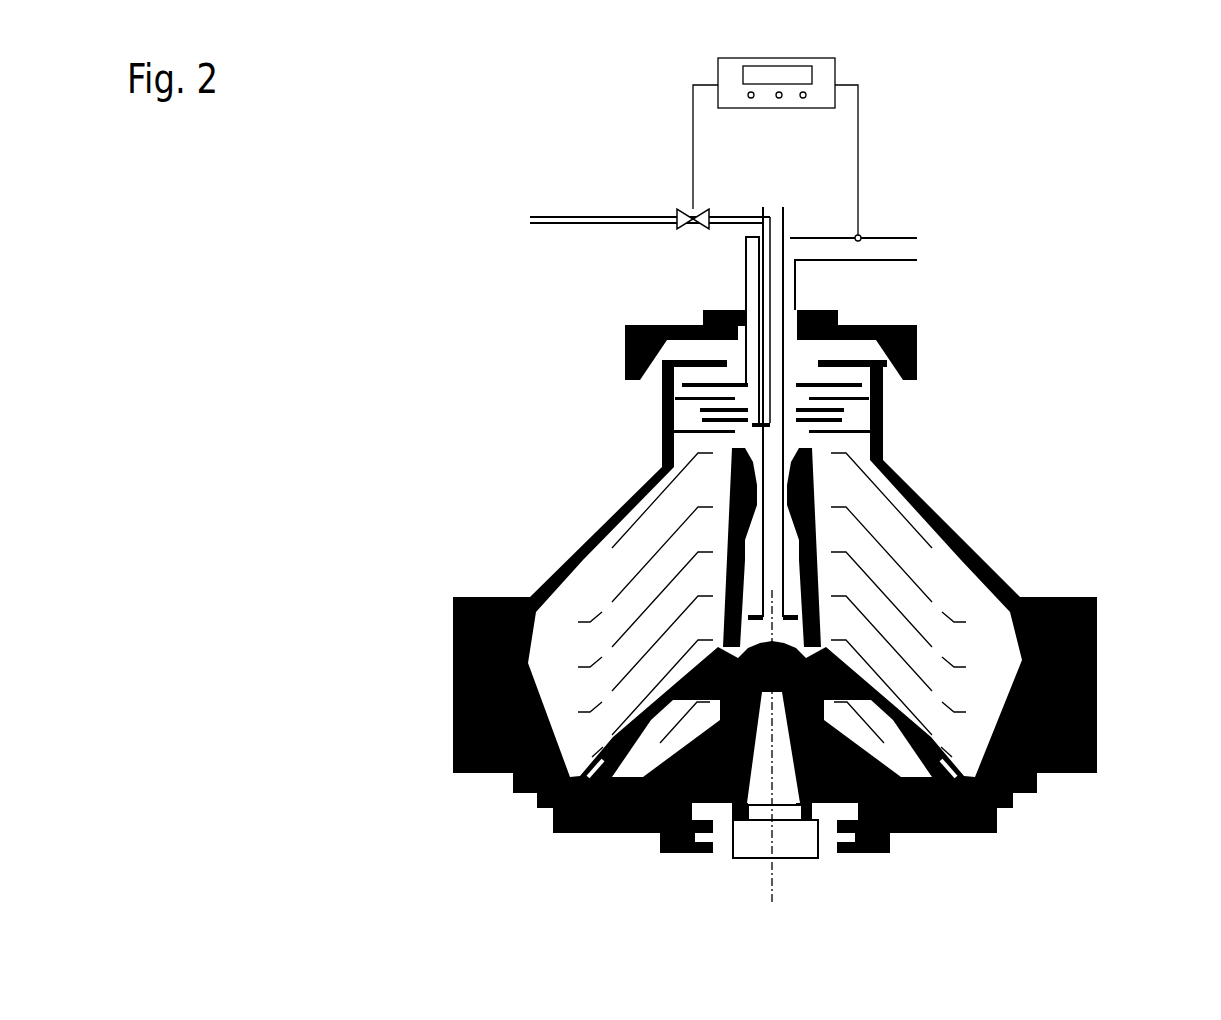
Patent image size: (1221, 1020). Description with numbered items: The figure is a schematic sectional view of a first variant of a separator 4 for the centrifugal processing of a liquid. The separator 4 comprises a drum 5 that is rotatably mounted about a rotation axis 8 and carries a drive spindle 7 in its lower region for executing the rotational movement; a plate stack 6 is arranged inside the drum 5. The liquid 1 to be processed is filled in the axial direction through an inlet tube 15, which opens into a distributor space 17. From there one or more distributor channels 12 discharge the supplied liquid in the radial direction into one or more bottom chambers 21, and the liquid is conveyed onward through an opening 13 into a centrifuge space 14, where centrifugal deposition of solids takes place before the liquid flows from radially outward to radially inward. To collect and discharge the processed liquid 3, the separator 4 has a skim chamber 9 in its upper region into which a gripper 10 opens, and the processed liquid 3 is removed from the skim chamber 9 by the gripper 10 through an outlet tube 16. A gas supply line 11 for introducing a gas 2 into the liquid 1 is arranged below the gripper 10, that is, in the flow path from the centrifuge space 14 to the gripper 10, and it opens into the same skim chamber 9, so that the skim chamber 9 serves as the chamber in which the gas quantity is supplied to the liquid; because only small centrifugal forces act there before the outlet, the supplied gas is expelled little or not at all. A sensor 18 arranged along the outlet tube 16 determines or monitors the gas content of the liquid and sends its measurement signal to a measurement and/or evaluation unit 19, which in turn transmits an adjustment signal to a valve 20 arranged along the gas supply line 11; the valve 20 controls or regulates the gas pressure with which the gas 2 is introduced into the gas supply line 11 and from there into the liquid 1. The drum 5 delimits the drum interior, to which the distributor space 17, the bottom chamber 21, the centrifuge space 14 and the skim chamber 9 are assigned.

The liquid 1 is at (771, 266).
The gas 2 is at (638, 229).
The processed liquid 3 is at (863, 238).
The separator 4 is at (764, 502).
The drum 5 is at (724, 606).
The plate stack 6 is at (903, 485).
The drive spindle 7 is at (758, 778).
The rotation axis 8 is at (775, 905).
The skim chamber 9 is at (690, 412).
The gripper 10 is at (847, 412).
The gas supply line 11 is at (748, 426).
The distributor channel 12 is at (697, 700).
The opening 13 is at (605, 755).
The centrifuge space 14 is at (995, 635).
The inlet tube 15 is at (778, 207).
The outlet tube 16 is at (920, 262).
The distributor space 17 is at (793, 627).
The sensor 18 is at (860, 235).
The measurement and/or evaluation unit 19 is at (836, 68).
The valve 20 is at (697, 215).
The bottom chamber 21 is at (667, 728).